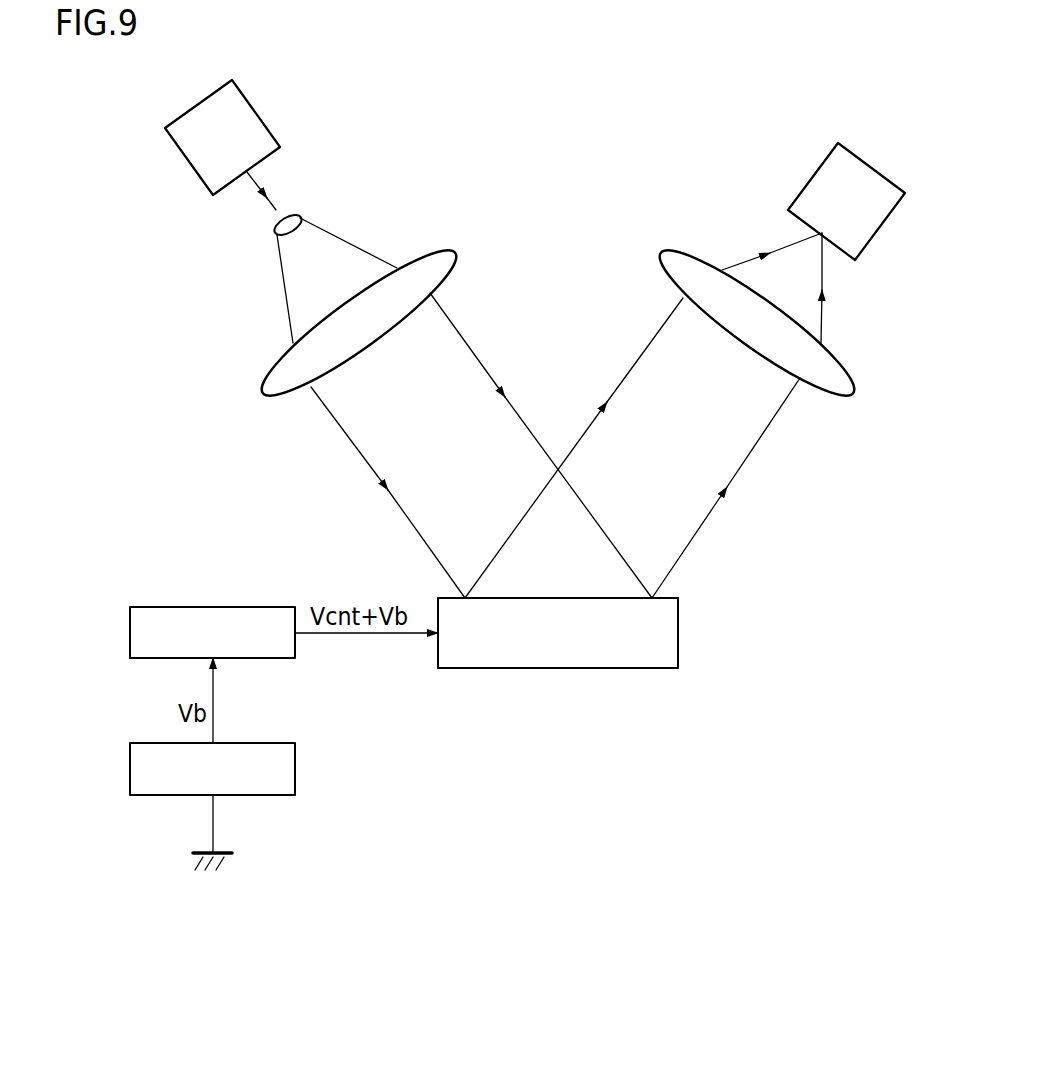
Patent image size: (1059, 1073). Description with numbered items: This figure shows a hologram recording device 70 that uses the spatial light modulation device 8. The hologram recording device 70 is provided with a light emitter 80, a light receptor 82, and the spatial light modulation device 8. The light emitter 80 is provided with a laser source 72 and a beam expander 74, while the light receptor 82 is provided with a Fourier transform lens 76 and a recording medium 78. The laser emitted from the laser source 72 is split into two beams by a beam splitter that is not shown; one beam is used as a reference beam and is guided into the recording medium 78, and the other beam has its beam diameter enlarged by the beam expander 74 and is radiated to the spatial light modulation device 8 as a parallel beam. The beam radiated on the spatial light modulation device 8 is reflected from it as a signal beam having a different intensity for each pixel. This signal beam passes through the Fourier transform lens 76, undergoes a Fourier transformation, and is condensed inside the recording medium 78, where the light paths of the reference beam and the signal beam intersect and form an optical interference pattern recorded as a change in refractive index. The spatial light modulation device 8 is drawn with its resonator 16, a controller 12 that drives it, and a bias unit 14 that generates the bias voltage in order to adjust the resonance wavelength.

The spatial light modulation device 8 is at (688, 595).
The controller 12 is at (130, 630).
The bias unit 14 is at (130, 767).
The resonator 16 is at (560, 668).
The hologram recording device 70 is at (867, 752).
The laser source 72 is at (258, 113).
The beam expander 74 is at (455, 252).
The Fourier transform lens 76 is at (842, 362).
The recording medium 78 is at (873, 163).
The light emitter 80 is at (155, 75).
The light receptor 82 is at (915, 75).